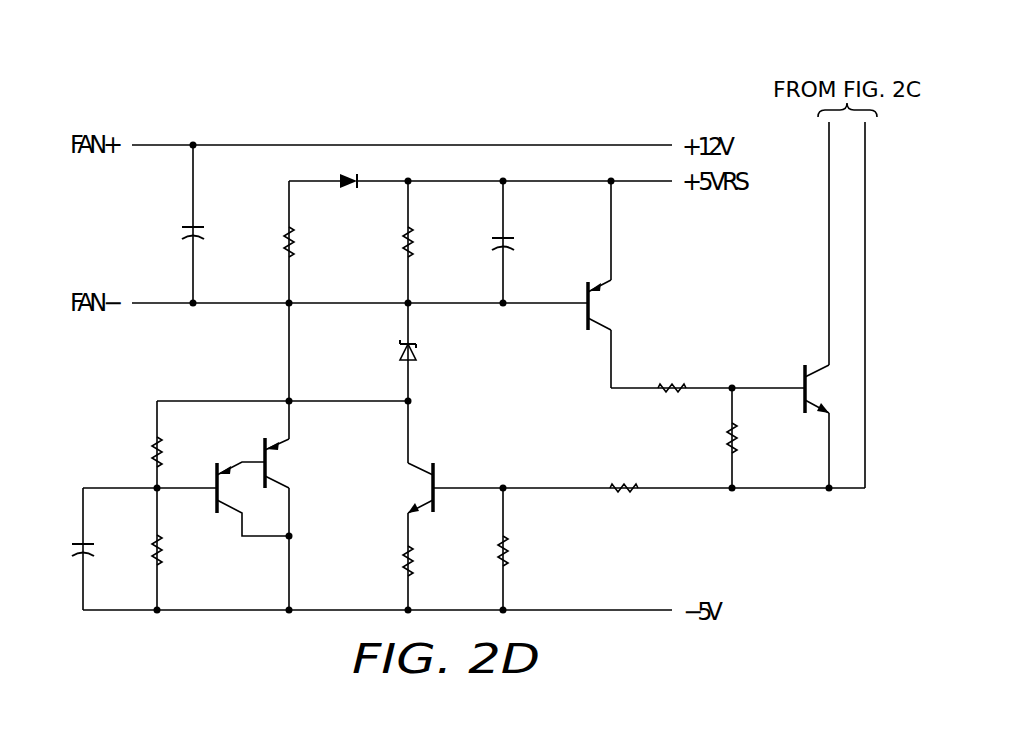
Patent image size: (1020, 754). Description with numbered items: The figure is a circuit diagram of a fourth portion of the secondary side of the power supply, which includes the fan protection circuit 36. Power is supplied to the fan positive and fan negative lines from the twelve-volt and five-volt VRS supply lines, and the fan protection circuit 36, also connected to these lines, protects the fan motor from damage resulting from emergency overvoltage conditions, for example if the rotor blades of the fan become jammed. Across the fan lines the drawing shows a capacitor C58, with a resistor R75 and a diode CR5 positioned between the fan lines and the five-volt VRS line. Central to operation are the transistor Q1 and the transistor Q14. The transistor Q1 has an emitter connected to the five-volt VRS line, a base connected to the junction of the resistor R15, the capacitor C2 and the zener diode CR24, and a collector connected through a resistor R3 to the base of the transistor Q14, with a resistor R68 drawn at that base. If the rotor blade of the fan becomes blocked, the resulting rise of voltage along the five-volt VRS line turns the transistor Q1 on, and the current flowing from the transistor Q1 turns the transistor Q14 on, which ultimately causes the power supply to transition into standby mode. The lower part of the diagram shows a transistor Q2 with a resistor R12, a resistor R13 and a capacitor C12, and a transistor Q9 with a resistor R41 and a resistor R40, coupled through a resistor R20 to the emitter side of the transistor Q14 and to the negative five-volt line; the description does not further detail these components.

The fan protection circuit 36 is at (355, 53).
The capacitor C58 is at (215, 234).
The resistor R75 is at (310, 242).
The diode CR5 is at (370, 171).
The resistor R15 is at (430, 243).
The capacitor C2 is at (519, 245).
The transistor Q1 is at (609, 305).
The zener diode CR24 is at (437, 352).
The transistor Q14 is at (833, 389).
The resistor R3 is at (672, 376).
The resistor R68 is at (711, 440).
The resistor R20 is at (624, 475).
The transistor Q2 is at (264, 487).
The resistor R12 is at (135, 453).
The resistor R13 is at (135, 551).
The capacitor C12 is at (67, 538).
The transistor Q9 is at (410, 488).
The resistor R41 is at (389, 563).
The resistor R40 is at (524, 552).